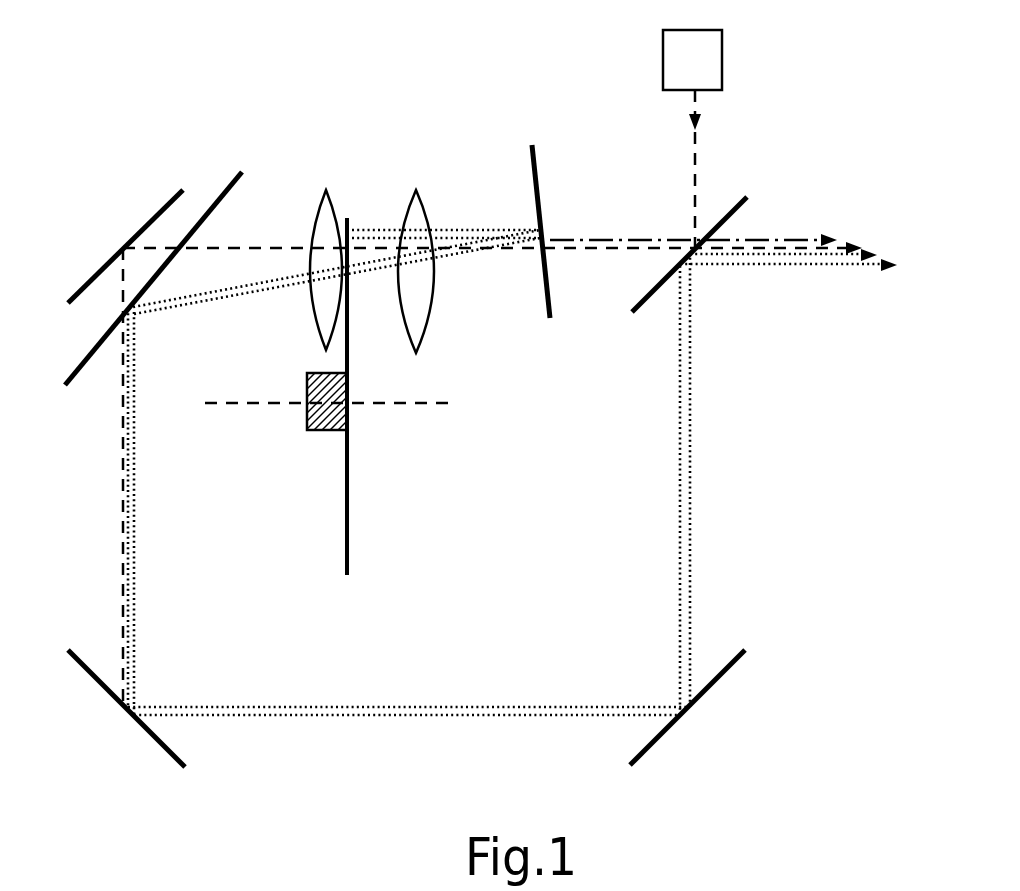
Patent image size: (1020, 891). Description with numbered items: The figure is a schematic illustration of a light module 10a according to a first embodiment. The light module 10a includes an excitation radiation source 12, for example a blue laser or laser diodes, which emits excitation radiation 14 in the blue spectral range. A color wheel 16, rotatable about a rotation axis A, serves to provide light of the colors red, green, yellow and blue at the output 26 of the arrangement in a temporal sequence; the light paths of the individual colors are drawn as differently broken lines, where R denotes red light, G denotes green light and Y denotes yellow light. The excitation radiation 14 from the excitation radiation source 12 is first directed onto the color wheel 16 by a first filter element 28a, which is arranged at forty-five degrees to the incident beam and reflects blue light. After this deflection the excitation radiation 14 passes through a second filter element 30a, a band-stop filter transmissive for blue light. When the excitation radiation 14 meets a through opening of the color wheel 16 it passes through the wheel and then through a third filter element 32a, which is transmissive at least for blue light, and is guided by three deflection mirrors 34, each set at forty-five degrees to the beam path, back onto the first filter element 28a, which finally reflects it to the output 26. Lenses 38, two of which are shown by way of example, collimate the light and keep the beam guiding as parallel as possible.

The light module 10a is at (180, 80).
The excitation radiation source 12 is at (713, 62).
The excitation radiation 14 is at (695, 155).
The color wheel 16 is at (346, 510).
The output 26 is at (886, 222).
The first filter element 28a is at (748, 200).
The second filter element 30a is at (540, 190).
The third filter element 32a is at (218, 200).
The deflection mirrors 34 is at (155, 216).
The lenses 38 is at (312, 228).
The red light R is at (618, 240).
The green light G is at (390, 230).
The yellow light Y is at (380, 240).
The rotation axis A is at (316, 403).